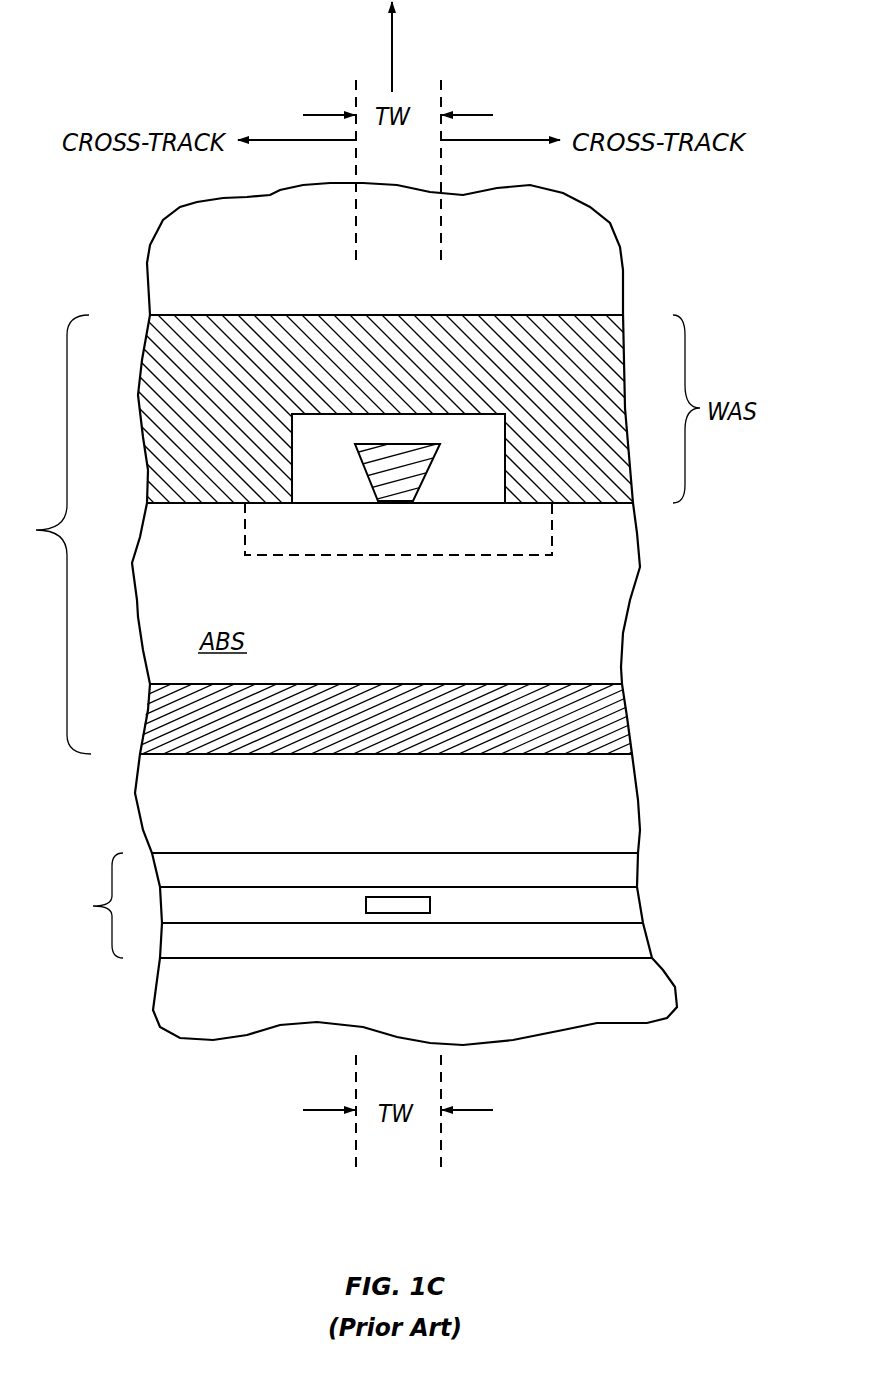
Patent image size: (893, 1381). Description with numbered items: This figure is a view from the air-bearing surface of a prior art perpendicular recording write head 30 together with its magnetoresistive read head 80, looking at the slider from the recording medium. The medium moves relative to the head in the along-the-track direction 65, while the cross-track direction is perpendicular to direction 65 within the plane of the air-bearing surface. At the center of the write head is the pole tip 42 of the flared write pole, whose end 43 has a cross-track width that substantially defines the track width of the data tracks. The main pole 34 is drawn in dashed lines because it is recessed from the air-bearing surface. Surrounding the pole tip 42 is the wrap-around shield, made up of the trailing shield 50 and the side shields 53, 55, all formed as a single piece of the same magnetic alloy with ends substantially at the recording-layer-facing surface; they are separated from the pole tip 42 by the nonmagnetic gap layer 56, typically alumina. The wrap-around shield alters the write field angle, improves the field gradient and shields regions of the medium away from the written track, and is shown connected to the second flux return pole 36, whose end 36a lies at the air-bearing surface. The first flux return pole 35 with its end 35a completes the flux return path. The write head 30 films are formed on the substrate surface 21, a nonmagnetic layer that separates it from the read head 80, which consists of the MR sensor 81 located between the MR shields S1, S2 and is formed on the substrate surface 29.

The along-the-track direction 65 is at (393, 45).
The second flux return pole 36 is at (612, 220).
The end of second flux return pole 36a is at (610, 258).
The trailing shield 50 is at (492, 325).
The side shield 53 is at (605, 397).
The side shield 55 is at (150, 406).
The gap layer 56 is at (435, 430).
The pole tip 42 is at (428, 470).
The end of pole tip 43 is at (400, 493).
The main pole 34 is at (505, 545).
The first flux return pole 35 is at (623, 695).
The end of first flux return pole 35a is at (615, 723).
The trailing surface 21 is at (608, 755).
The write head 30 is at (46, 534).
The magnetoresistive read head 80 is at (91, 905).
The MR sensor 81 is at (430, 902).
The MR shield S1 is at (643, 945).
The MR shield S2 is at (625, 873).
The substrate surface 29 is at (623, 958).